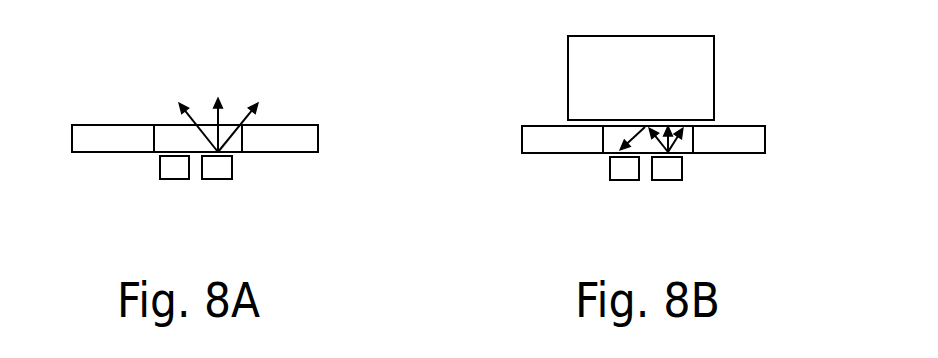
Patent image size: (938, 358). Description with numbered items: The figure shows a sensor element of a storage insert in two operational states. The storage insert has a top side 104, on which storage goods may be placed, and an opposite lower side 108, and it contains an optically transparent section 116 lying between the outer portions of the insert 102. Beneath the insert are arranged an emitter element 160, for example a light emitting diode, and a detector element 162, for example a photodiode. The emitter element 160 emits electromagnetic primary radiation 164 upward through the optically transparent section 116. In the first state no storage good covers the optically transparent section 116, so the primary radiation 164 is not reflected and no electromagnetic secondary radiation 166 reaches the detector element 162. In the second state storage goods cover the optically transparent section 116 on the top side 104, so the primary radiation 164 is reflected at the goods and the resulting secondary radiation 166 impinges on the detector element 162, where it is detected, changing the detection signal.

In FIG. 8A, the housing 102 is at (313, 135).
In FIG. 8B, the housing 102 is at (542, 138).
In FIG. 8A, the top side 104 is at (103, 133).
In FIG. 8B, the top side 104 is at (742, 134).
In FIG. 8A, the lower side 108 is at (93, 153).
In FIG. 8B, the lower side 108 is at (752, 153).
In FIG. 8A, the optically transparent section 116 is at (158, 135).
In FIG. 8B, the optically transparent section 116 is at (615, 135).
In FIG. 8A, the emitter element 160 is at (218, 172).
In FIG. 8B, the emitter element 160 is at (665, 172).
In FIG. 8A, the detector element 162 is at (177, 172).
In FIG. 8B, the detector element 162 is at (620, 172).
In FIG. 8A, the electromagnetic primary radiation 164 is at (253, 107).
In FIG. 8B, the electromagnetic primary radiation 164 is at (687, 130).
In FIG. 8B, the electromagnetic secondary radiation 166 is at (624, 138).